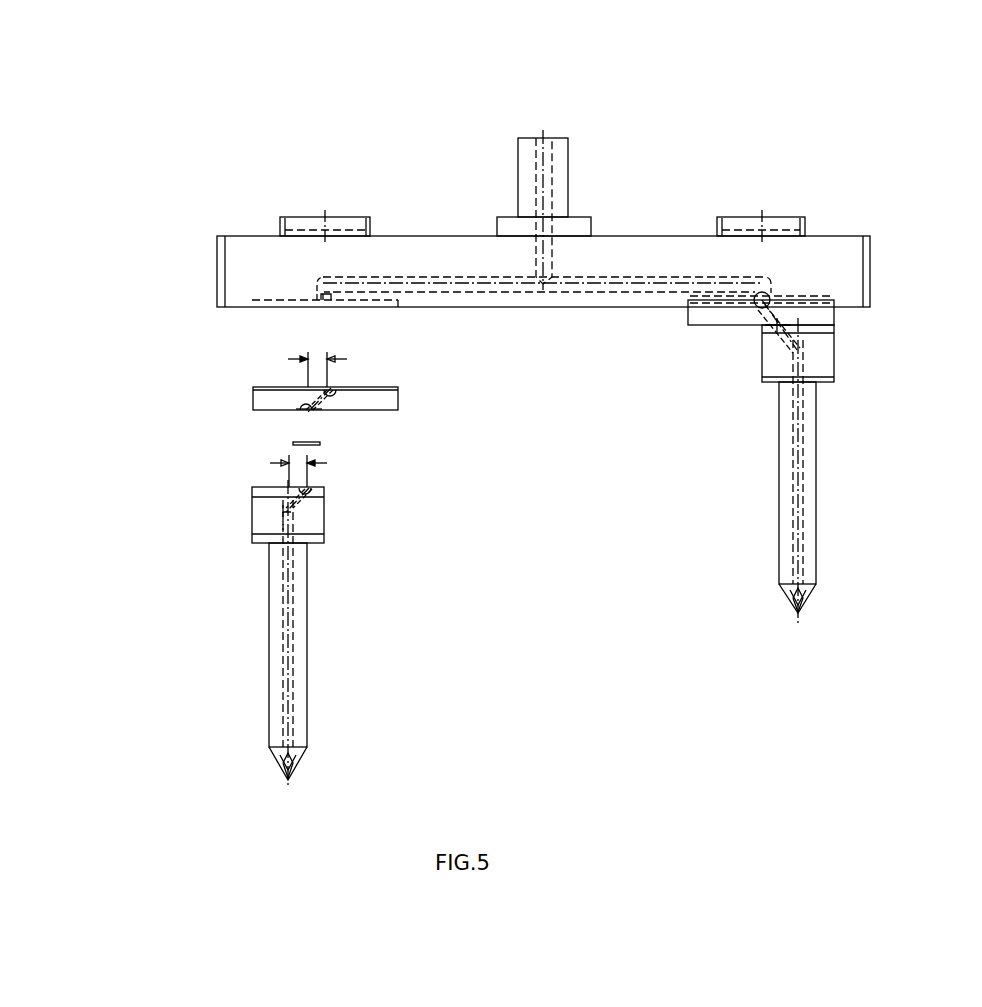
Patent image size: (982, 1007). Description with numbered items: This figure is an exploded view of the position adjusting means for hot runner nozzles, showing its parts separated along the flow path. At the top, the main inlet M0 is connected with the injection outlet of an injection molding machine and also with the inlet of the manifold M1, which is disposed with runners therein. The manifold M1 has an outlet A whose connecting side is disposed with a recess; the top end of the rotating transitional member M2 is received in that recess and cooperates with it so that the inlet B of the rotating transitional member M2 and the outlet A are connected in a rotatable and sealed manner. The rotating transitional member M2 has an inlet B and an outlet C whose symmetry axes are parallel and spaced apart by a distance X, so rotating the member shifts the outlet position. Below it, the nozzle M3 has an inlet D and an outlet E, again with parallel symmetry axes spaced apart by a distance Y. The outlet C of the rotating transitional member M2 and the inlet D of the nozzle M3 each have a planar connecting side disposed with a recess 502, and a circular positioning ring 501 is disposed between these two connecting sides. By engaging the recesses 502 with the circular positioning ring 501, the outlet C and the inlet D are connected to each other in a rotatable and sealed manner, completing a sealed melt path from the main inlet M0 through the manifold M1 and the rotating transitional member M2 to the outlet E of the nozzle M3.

The main inlet M0 is at (528, 158).
The manifold M1 is at (268, 267).
The recess 502 is at (252, 300).
The outlet of the manifold A is at (323, 300).
The rotating transitional member M2 is at (252, 390).
The inlet of the rotating transitional member B is at (330, 387).
The circular positioning ring 501 is at (293, 442).
The outlet of the rotating transitional member C is at (309, 410).
The inlet of the nozzle D is at (324, 490).
The outlet of the nozzle E is at (289, 510).
The nozzle M3 is at (252, 545).